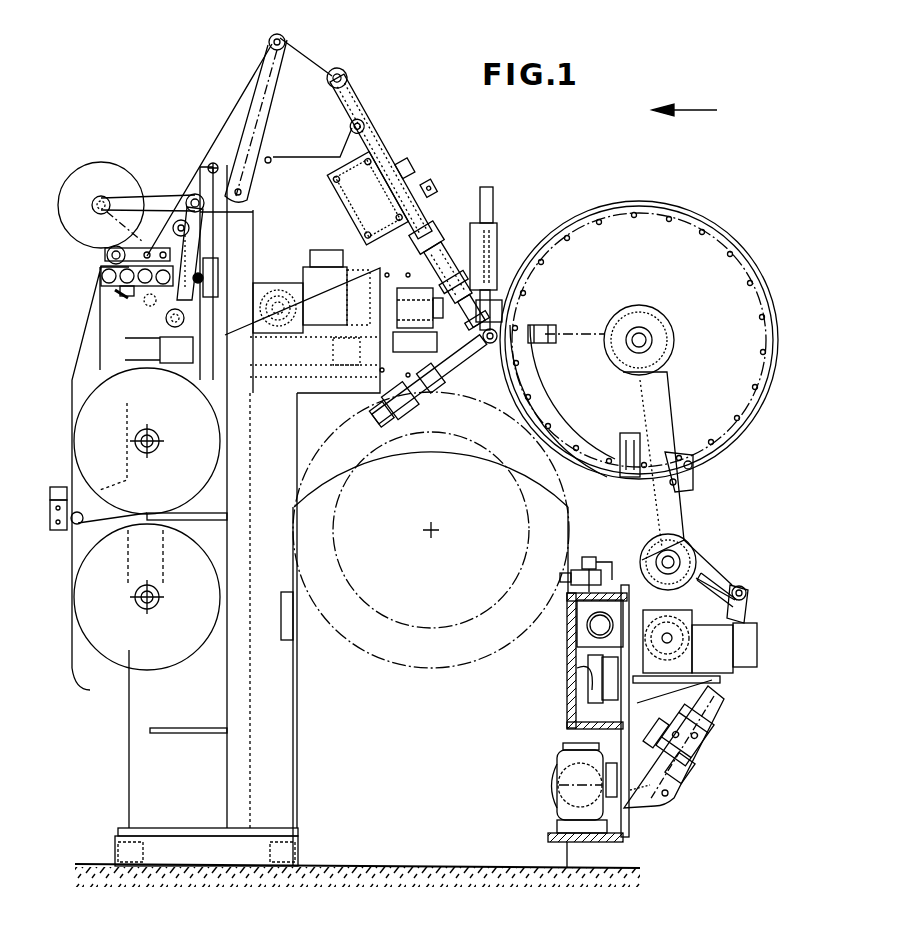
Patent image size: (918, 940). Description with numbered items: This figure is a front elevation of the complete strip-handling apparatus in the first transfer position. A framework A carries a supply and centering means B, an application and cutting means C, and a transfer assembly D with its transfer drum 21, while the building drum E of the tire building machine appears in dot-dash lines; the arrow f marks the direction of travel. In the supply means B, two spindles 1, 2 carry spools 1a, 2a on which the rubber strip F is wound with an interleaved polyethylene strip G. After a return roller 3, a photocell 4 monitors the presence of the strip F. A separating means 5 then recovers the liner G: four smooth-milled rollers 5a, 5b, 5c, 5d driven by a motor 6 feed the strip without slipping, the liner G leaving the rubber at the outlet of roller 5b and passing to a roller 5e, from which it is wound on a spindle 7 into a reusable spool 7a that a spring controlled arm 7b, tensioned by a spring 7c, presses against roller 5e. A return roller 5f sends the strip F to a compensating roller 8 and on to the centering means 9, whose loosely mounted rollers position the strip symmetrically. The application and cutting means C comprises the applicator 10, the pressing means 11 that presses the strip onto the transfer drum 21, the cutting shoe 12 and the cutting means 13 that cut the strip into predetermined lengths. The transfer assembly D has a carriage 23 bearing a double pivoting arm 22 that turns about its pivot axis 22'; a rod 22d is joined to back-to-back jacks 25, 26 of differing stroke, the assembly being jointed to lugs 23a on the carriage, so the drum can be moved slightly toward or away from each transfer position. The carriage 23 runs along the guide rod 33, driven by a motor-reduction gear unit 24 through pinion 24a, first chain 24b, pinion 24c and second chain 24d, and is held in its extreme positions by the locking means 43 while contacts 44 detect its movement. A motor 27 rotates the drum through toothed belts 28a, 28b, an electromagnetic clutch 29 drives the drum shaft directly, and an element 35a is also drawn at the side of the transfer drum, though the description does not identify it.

The spindle 1 is at (160, 603).
The spool 1a is at (93, 652).
The spindle 2 is at (160, 447).
The spool 2a is at (73, 438).
The return roller 3 is at (75, 526).
The photocell 4 is at (52, 498).
The separating means 5 is at (126, 286).
The roller 5a is at (103, 272).
The roller 5b is at (145, 286).
The roller 5c is at (147, 285).
The roller 5d is at (200, 285).
The roller 5e is at (106, 252).
The return roller 5f is at (189, 228).
The motor 6 is at (302, 272).
The spindle 7 is at (88, 168).
The spool 7a is at (60, 201).
The spring controlled arm 7b is at (166, 199).
The spring 7c is at (172, 215).
The compensating roller 8 is at (213, 278).
The centering means 9 is at (433, 186).
The applicator 10 is at (445, 272).
The pressing means 11 is at (458, 382).
The cutting shoe 12 is at (505, 258).
The cutting means 13 is at (450, 396).
The transfer drum 21 is at (720, 222).
The double pivoting arm 22 is at (683, 486).
The pivot axis 22' is at (690, 557).
The rod 22d is at (750, 595).
The carriage 23 is at (700, 706).
The lug 23a is at (650, 808).
The motor-reduction gear unit 24 is at (556, 790).
The pinion 24a is at (624, 815).
The first chain 24b is at (600, 744).
The pinion 24c is at (578, 634).
The second chain 24d is at (592, 676).
The jack 25 is at (725, 682).
The jack 26 is at (705, 735).
The motor 27 is at (752, 640).
The toothed belt 28a is at (742, 588).
The toothed belt 28b is at (692, 493).
The electromagnetic clutch 29 is at (664, 318).
The guide rod 33 is at (572, 640).
The sensor block 35a is at (540, 325).
The locking means 43 is at (572, 580).
The contacts 44 is at (590, 557).
The framework A is at (273, 160).
The supply and centering means B is at (415, 186).
The application and cutting means C is at (498, 262).
The transfer assembly D is at (616, 203).
The tire-building drum E is at (400, 665).
The rubber strip F is at (228, 122).
The polyethylene strip G is at (115, 294).
The direction arrow f is at (684, 99).